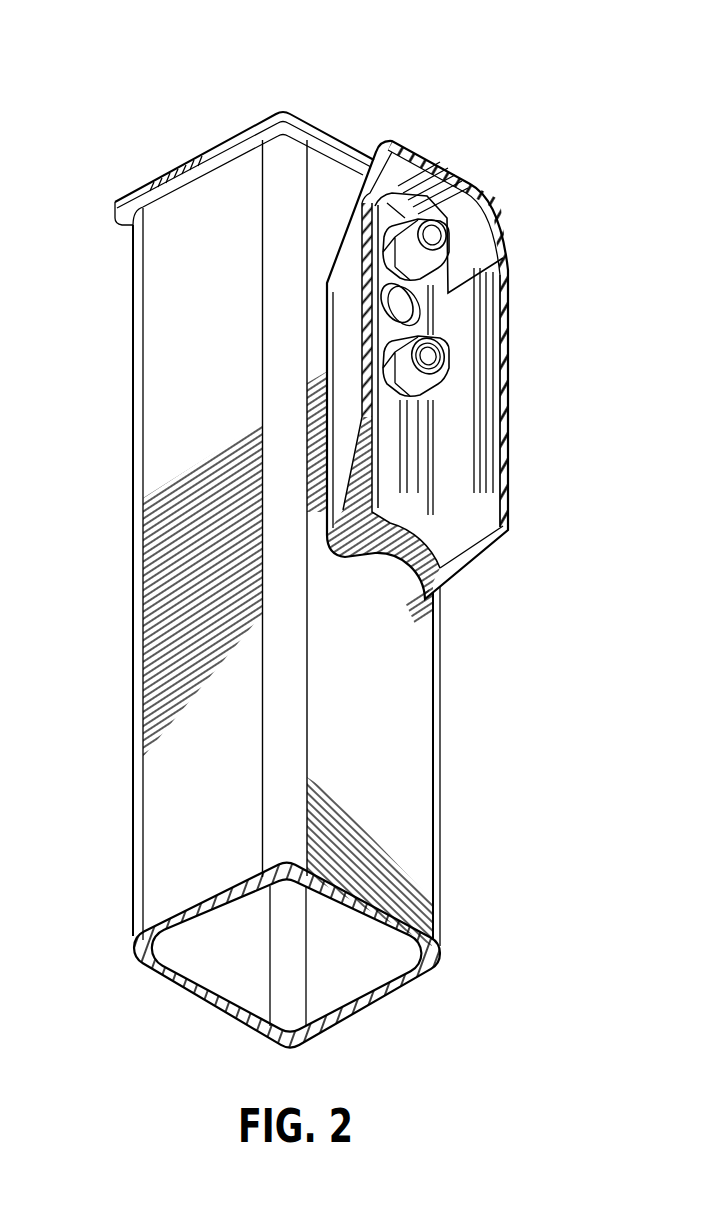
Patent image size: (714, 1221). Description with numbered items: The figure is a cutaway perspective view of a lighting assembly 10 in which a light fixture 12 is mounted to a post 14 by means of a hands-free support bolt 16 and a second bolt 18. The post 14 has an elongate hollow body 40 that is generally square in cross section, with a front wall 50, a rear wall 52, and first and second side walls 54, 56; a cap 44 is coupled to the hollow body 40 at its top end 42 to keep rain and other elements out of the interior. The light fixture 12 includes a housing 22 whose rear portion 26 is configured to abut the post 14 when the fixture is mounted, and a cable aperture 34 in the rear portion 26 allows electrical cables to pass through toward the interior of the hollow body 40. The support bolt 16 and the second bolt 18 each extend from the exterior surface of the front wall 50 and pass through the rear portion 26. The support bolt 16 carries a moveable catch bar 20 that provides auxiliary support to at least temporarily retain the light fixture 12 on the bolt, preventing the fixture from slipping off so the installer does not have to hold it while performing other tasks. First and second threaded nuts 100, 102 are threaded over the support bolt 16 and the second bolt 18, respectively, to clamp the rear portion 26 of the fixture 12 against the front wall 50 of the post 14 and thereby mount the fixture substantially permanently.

The lighting assembly 10 is at (162, 58).
The light fixture 12 is at (392, 125).
The post 14 is at (125, 558).
The hands-free support bolt 16 is at (447, 220).
The second bolt 18 is at (440, 343).
The catch bar 20 is at (449, 226).
The housing 22 is at (445, 160).
The rear portion 26 is at (325, 342).
The cable aperture 34 is at (407, 305).
The hollow body 40 is at (135, 466).
The top end 42 is at (216, 163).
The cap 44 is at (257, 122).
The front wall 50 is at (349, 740).
The rear wall 52 is at (213, 958).
The first side wall 54 is at (182, 816).
The second side wall 56 is at (358, 944).
The first threaded nut 100 is at (437, 262).
The second threaded nut 102 is at (440, 377).